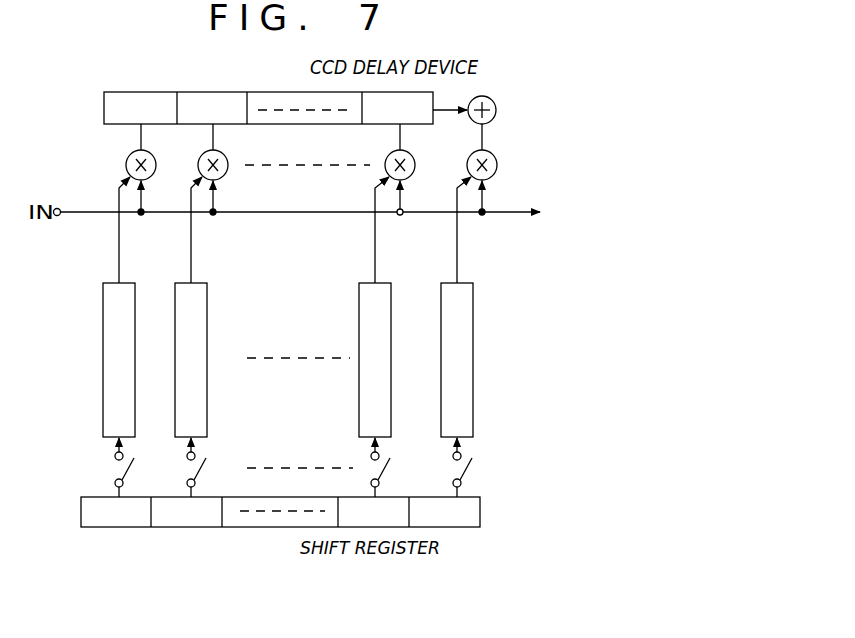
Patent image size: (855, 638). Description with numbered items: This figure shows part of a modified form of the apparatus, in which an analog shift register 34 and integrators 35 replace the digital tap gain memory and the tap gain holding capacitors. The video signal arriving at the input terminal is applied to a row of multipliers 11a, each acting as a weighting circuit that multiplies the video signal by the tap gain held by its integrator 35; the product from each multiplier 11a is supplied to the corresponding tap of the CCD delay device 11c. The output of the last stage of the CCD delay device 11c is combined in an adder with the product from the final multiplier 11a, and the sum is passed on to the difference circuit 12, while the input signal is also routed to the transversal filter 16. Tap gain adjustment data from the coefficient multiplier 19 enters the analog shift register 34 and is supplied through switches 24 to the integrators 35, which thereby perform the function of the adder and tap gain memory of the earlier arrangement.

The CCD delay device 11c is at (285, 92).
The multiplier 11a is at (228, 161).
The integrator 35 is at (207, 323).
The switch 24 is at (468, 471).
The analog shift register 34 is at (280, 528).
The difference circuit 12 is at (496, 110).
The transversal filter 16 is at (623, 213).
The coefficient multiplier 19 is at (158, 564).